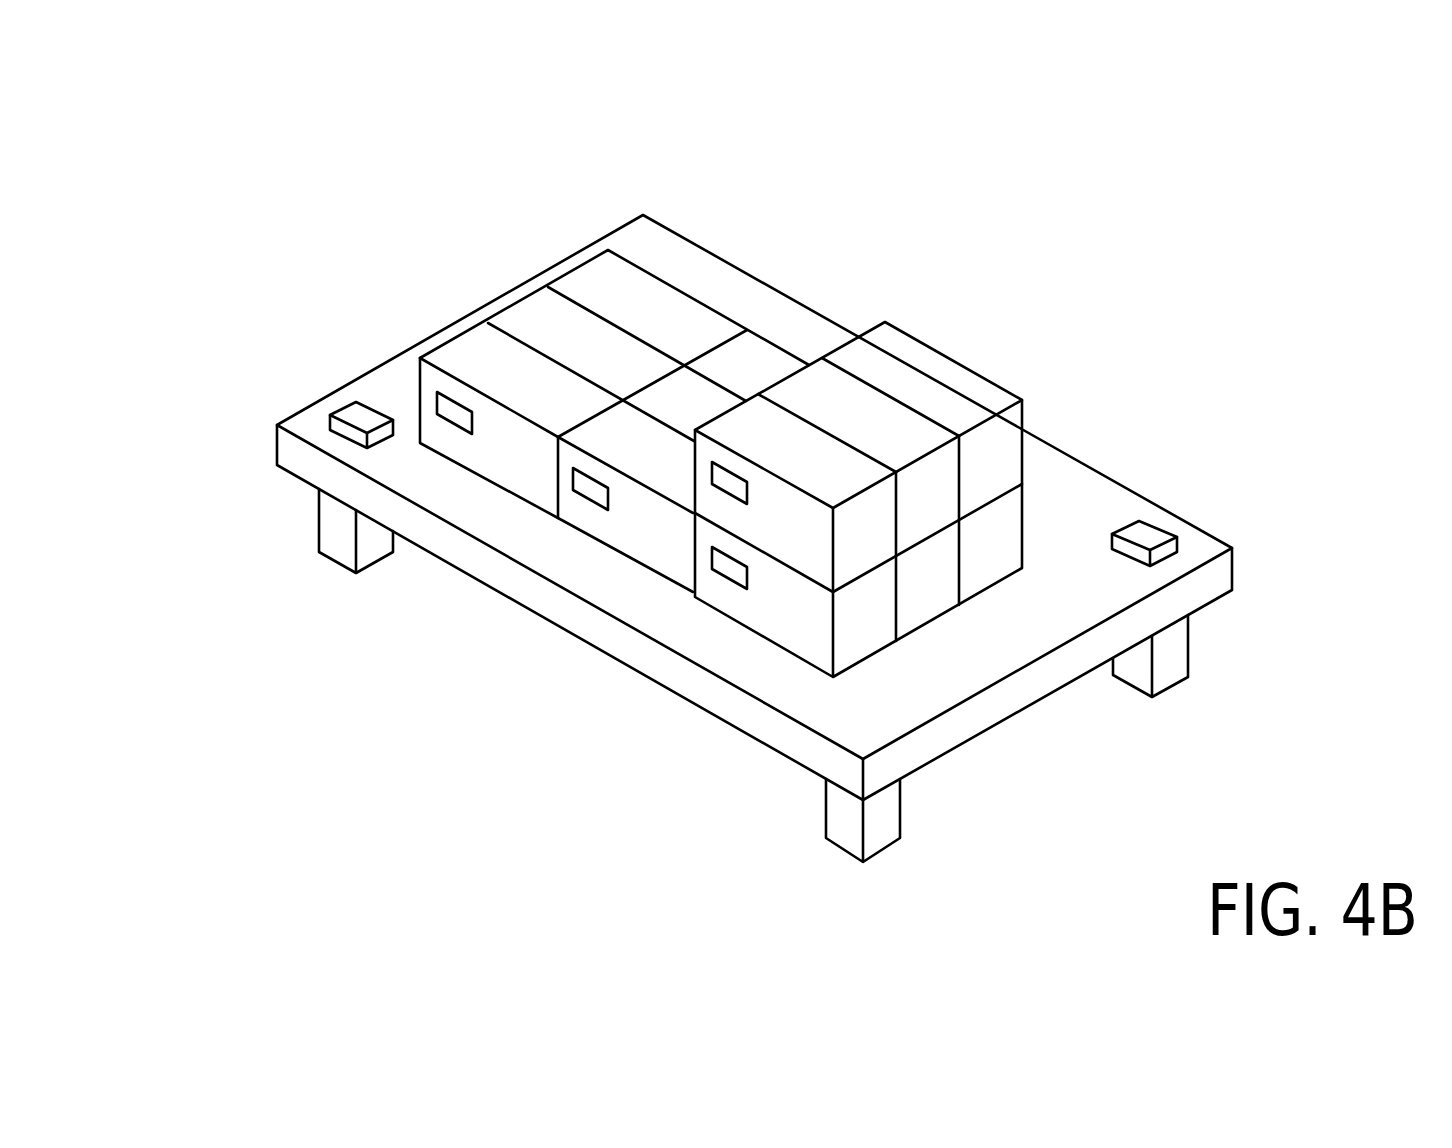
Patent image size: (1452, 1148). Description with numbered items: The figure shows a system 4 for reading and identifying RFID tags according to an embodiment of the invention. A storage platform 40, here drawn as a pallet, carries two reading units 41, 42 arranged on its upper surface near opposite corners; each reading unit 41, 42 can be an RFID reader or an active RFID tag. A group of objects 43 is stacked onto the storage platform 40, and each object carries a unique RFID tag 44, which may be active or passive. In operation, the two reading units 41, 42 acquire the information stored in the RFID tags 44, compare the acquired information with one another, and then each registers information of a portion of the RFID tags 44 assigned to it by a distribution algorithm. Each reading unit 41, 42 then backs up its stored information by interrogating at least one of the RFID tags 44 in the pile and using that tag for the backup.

The system for reading and identifying RFID tag 4 is at (490, 142).
The storage platform 40 is at (728, 297).
The reading unit 41 is at (1148, 535).
The reading unit 42 is at (353, 410).
The group of objects 43 is at (920, 368).
The RFID tag 44 is at (720, 477).